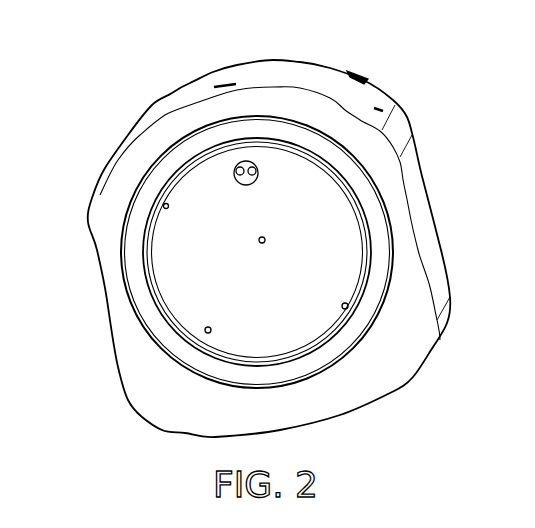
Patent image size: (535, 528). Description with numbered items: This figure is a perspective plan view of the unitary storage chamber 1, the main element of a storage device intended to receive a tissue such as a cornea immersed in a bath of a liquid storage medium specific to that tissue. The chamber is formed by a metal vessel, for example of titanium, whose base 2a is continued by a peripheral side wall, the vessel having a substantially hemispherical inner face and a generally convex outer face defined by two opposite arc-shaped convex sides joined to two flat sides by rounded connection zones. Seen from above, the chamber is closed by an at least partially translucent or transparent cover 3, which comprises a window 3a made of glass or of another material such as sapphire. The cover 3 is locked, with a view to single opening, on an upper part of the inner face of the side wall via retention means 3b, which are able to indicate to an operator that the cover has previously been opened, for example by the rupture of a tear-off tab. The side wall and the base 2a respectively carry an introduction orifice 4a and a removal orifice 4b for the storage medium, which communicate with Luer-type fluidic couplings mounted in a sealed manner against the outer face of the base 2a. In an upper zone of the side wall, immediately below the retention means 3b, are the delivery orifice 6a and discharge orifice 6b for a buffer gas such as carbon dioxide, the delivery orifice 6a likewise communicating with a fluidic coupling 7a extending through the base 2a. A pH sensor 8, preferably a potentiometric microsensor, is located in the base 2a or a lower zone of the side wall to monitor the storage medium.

The unitary storage chamber 1 is at (230, 245).
The base 2a is at (390, 98).
The cover 3 is at (382, 224).
The window 3a is at (279, 298).
The retention means 3b is at (368, 203).
The introduction orifice 4a is at (347, 309).
The removal orifice 4b is at (259, 237).
The delivery orifice 6a is at (164, 205).
The discharge orifice 6b is at (206, 332).
The fluidic coupling 7a is at (365, 78).
The pH sensor 8 is at (248, 161).